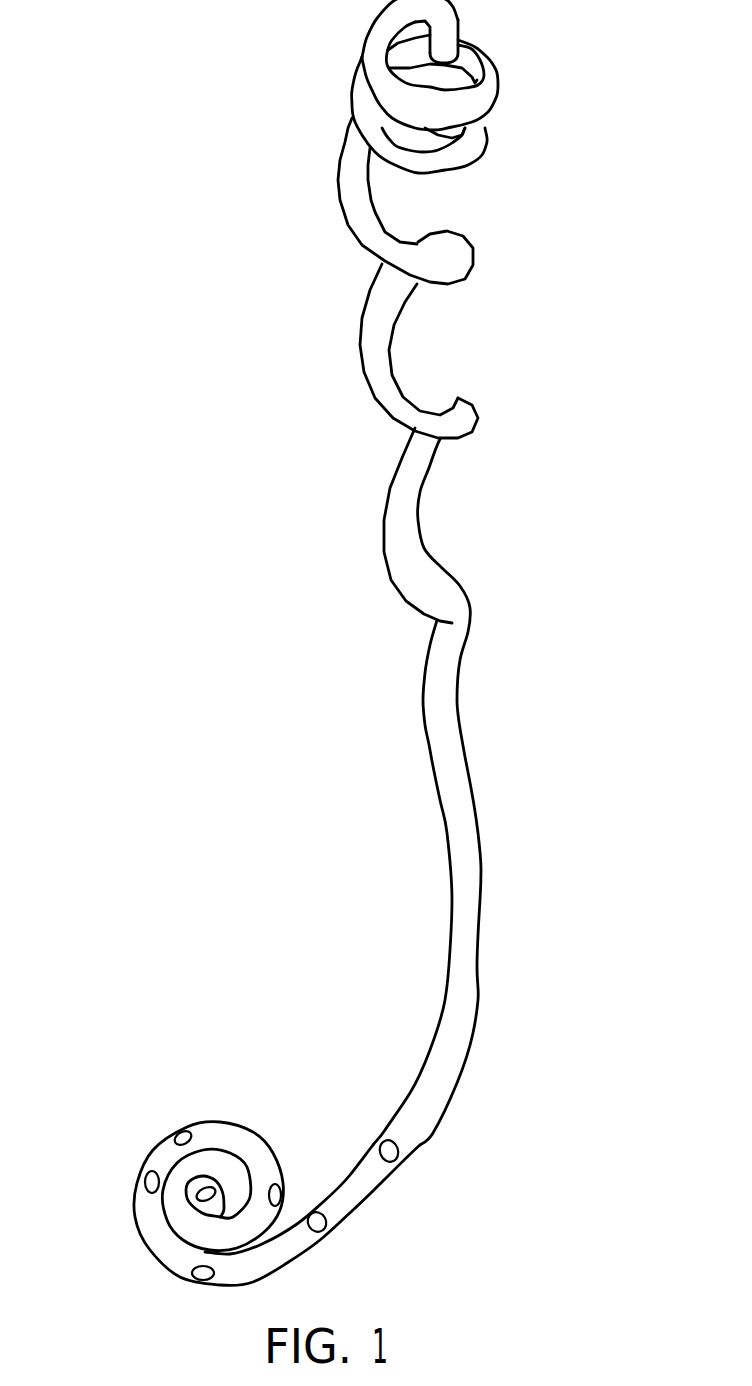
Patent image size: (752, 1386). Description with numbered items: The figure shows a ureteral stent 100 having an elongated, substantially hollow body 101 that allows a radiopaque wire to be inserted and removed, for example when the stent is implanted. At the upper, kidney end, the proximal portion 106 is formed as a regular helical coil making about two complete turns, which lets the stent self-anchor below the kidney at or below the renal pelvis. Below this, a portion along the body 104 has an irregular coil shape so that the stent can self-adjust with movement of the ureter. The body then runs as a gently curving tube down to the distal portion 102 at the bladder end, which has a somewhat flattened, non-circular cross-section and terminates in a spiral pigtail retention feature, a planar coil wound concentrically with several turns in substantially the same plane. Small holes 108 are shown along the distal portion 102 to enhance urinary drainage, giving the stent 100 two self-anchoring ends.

The ureteral stent 100 is at (330, 643).
The elongated substantially hollow body 101 is at (449, 786).
The distal portion 102 is at (265, 1204).
The irregular coil portion 104 is at (450, 278).
The proximal portion 106 is at (487, 86).
The small holes 108 is at (285, 1204).